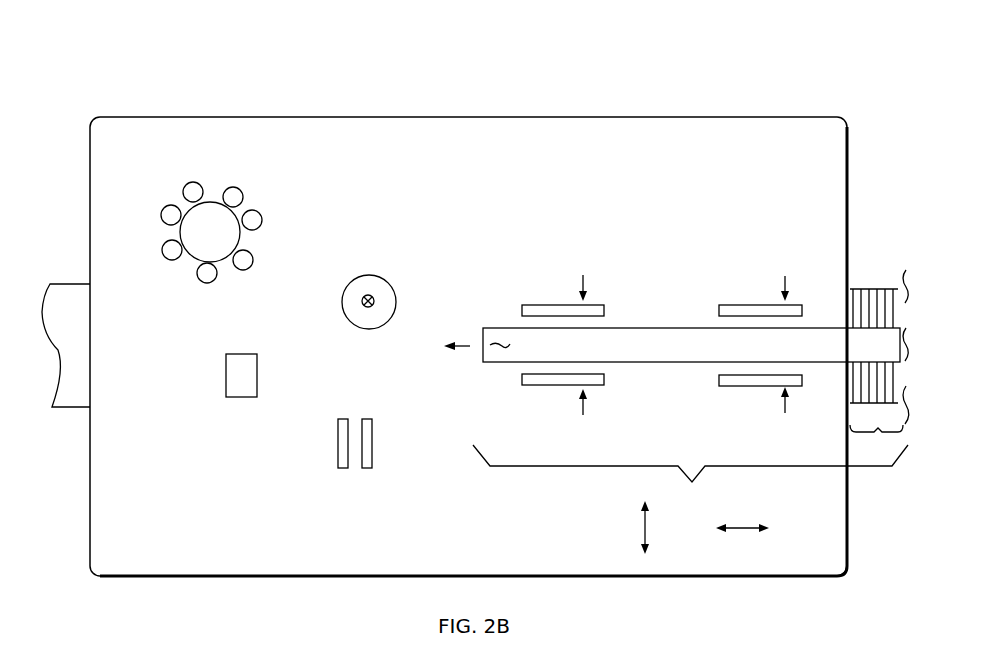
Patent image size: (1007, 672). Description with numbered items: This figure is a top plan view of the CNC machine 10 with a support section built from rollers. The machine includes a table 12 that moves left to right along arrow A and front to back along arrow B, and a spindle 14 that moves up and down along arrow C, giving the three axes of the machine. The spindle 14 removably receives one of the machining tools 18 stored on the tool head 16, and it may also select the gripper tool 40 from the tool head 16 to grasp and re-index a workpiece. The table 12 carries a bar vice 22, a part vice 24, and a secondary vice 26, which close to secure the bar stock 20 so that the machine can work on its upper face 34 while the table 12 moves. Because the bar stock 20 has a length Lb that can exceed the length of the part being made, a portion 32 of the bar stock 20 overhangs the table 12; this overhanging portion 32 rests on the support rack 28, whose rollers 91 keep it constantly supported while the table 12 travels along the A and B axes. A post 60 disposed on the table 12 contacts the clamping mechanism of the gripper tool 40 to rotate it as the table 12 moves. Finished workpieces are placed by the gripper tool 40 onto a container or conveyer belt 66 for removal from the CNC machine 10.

The CNC machine 10 is at (640, 54).
The table 12 is at (465, 116).
The spindle 14 is at (382, 287).
The tool head 16 is at (207, 251).
The machining tools 18 is at (163, 250).
The gripper tool 40 is at (260, 216).
The bar stock 20 is at (838, 364).
The bar vice 22 is at (762, 305).
The part vice 24 is at (548, 305).
The secondary vice 26 is at (354, 483).
The support rack 28 is at (862, 289).
The overhanging portion 32 is at (876, 439).
The upper face 34 is at (502, 348).
The post 60 is at (257, 373).
The container or conveyer belt 66 is at (78, 409).
The rollers 91 is at (895, 377).
The arrow A is at (743, 528).
The arrow B is at (645, 528).
The arrow C is at (374, 299).
The length of the bar stock Lb is at (690, 475).